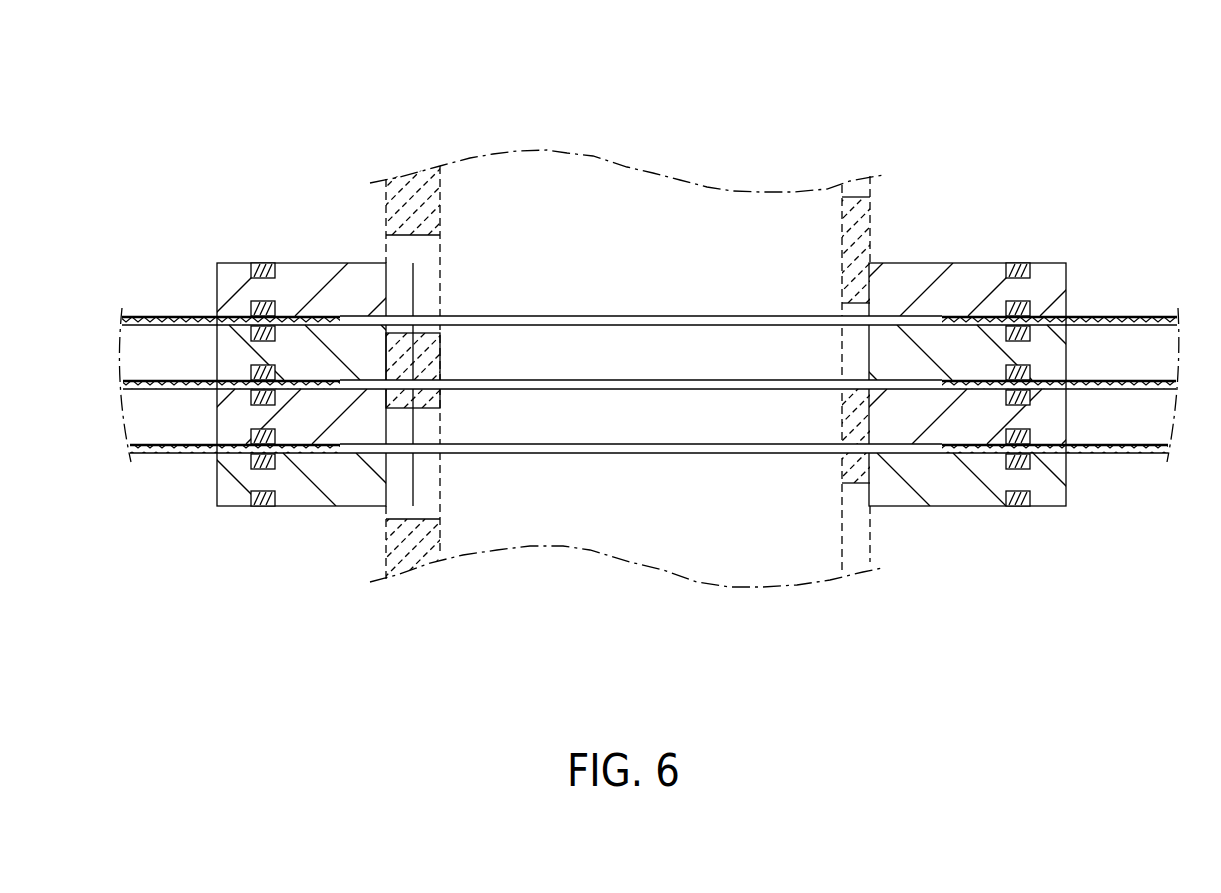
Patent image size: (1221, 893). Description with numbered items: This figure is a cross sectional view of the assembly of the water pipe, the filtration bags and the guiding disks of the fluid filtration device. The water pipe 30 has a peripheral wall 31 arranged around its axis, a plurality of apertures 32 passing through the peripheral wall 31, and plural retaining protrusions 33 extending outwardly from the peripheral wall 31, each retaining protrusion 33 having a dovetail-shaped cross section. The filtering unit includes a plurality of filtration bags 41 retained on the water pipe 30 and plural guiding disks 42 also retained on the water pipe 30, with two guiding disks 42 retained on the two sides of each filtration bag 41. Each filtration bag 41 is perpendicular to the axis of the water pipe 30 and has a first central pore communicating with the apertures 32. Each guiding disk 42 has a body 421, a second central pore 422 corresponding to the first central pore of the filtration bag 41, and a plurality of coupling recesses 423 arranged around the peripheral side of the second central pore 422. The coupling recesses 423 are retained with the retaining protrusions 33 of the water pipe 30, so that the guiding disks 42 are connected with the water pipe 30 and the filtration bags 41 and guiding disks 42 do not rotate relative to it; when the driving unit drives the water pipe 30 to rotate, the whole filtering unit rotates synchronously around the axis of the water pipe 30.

The water pipe 30 is at (424, 165).
The peripheral wall 31 is at (888, 229).
The apertures 32 is at (853, 347).
The retaining protrusions 33 is at (368, 403).
The filtration bag 41 is at (1134, 308).
The guiding disk 42 is at (988, 263).
The body 421 is at (297, 278).
The second central pore 422 is at (700, 285).
The coupling recesses 423 is at (400, 478).